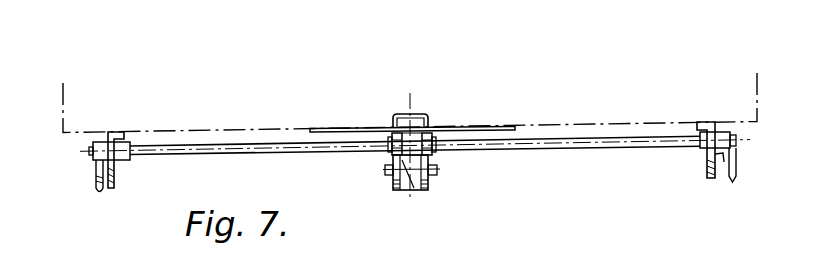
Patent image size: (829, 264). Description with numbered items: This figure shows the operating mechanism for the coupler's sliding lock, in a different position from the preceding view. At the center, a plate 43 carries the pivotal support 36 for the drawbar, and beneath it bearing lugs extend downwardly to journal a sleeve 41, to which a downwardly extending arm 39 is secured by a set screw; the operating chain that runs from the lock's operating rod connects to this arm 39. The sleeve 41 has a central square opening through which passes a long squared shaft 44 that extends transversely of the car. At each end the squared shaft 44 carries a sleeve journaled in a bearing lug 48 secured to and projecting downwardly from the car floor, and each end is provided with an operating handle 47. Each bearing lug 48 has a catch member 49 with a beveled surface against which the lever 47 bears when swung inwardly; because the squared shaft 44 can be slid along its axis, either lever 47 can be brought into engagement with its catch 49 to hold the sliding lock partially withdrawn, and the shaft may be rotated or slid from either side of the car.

The pivotal support 36 is at (415, 113).
The downwardly extending arm 39 is at (398, 187).
The sleeve 41 is at (433, 150).
The plate 43 is at (478, 128).
The squared shaft 44 is at (588, 142).
The operating handle 47 is at (96, 162).
The bearing lug 48 is at (114, 166).
The catch member 49 is at (721, 163).